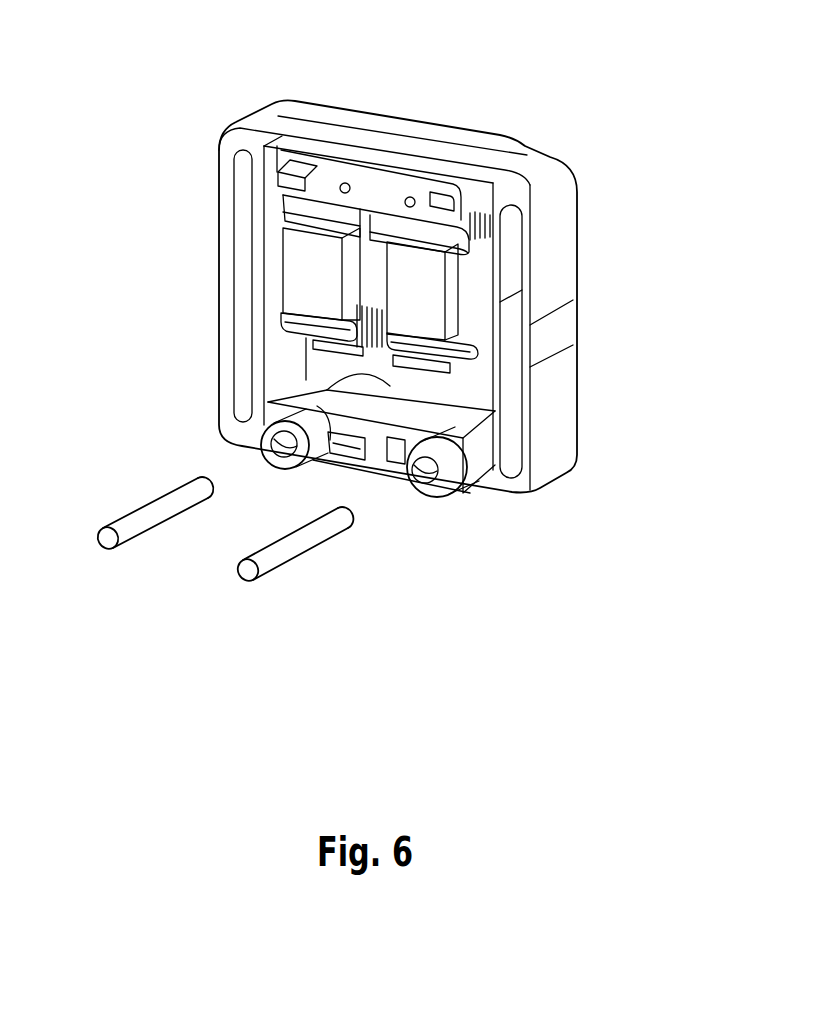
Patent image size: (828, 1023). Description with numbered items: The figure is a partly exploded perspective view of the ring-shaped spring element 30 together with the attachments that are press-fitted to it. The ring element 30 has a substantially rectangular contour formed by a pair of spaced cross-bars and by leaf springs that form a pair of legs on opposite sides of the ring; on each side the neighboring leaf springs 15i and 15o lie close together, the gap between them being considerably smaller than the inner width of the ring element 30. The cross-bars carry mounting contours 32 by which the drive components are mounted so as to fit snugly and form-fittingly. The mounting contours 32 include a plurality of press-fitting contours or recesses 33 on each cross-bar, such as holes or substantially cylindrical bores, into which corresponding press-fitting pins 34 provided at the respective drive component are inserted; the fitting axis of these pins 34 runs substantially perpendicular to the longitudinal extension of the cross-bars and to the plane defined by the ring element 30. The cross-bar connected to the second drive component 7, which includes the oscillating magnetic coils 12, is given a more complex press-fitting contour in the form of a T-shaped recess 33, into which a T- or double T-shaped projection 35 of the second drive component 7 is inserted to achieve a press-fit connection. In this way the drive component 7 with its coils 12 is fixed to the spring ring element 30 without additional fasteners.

The ring-shaped spring element 30 is at (583, 191).
The outer leaf spring 15o is at (560, 288).
The inner leaf spring 15i is at (510, 348).
The T- or double T-shaped projection 35 is at (424, 192).
The press-fitting recess 33 is at (278, 148).
The second drive component 7 is at (281, 217).
The magnetic coil 12 is at (300, 288).
The mounting contour 32 is at (278, 166).
The press-fitting pin 34 is at (123, 527).